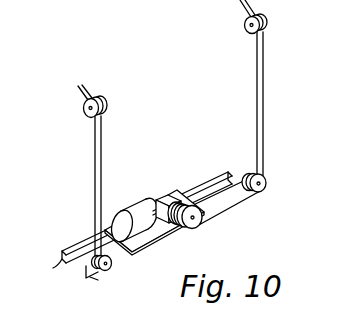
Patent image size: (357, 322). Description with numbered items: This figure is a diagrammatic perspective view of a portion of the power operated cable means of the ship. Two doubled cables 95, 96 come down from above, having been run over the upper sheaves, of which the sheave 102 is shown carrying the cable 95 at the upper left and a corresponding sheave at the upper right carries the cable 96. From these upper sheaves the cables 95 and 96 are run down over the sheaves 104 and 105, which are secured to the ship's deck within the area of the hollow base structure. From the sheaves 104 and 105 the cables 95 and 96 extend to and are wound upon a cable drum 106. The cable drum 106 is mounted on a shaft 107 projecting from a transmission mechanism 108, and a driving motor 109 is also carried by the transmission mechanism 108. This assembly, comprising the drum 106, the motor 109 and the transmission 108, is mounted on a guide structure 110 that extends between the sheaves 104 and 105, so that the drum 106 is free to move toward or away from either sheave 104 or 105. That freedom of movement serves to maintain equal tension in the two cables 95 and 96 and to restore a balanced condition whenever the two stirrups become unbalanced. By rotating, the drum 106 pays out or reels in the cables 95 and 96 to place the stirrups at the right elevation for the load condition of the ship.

The cable 95 is at (96, 186).
The cable 96 is at (257, 121).
The sheave 102 is at (82, 108).
The sheave 104 is at (111, 267).
The sheave 105 is at (267, 186).
The cable drum 106 is at (203, 221).
The shaft 107 is at (176, 220).
The transmission mechanism 108 is at (163, 198).
The driving motor 109 is at (138, 218).
The guide structure 110 is at (83, 278).